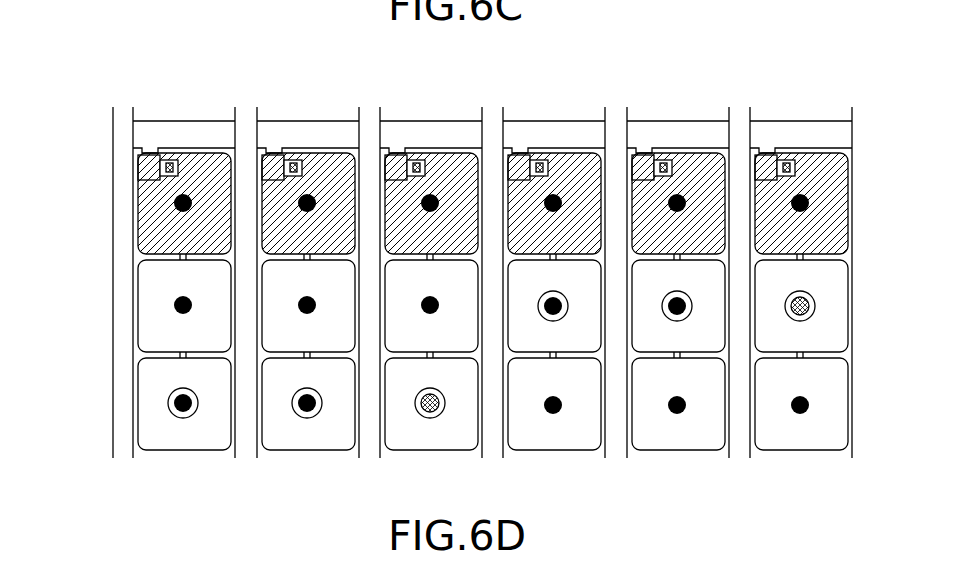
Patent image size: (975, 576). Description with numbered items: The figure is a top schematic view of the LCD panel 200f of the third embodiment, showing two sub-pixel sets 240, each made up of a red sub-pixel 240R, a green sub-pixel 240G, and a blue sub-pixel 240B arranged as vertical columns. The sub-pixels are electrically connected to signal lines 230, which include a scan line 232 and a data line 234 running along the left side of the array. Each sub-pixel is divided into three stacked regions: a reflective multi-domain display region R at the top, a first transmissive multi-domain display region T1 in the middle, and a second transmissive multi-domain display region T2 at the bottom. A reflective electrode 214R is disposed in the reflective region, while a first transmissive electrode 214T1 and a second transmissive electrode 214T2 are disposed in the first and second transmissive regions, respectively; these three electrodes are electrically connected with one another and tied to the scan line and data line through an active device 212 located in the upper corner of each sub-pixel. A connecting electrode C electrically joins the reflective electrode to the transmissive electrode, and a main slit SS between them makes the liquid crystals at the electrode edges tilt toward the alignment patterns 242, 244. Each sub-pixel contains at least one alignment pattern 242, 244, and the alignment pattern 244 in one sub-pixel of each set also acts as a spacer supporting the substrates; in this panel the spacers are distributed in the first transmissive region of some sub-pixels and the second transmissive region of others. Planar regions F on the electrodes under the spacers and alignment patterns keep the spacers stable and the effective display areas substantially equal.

The LCD panel 200f is at (812, 521).
The active device 212 is at (135, 172).
The reflective electrode 214R is at (150, 240).
The first transmissive electrode 214T1 is at (153, 305).
The second transmissive electrode 214T2 is at (153, 393).
The signal lines 230 is at (38, 37).
The scan line 232 is at (147, 134).
The data line 234 is at (123, 117).
The sub-pixel set 240 is at (182, 52).
The red sub-pixel 240R is at (235, 100).
The green sub-pixel 240G is at (359, 100).
The blue sub-pixel 240B is at (482, 100).
The alignment pattern 242 is at (183, 405).
The alignment pattern 244 is at (446, 402).
The planar region F is at (199, 401).
The connecting electrode C is at (673, 320).
The main slit SS is at (695, 357).
The reflective multi-domain display region R is at (860, 150).
The first transmissive multi-domain display region T1 is at (860, 258).
The second transmissive multi-domain display region T2 is at (860, 358).